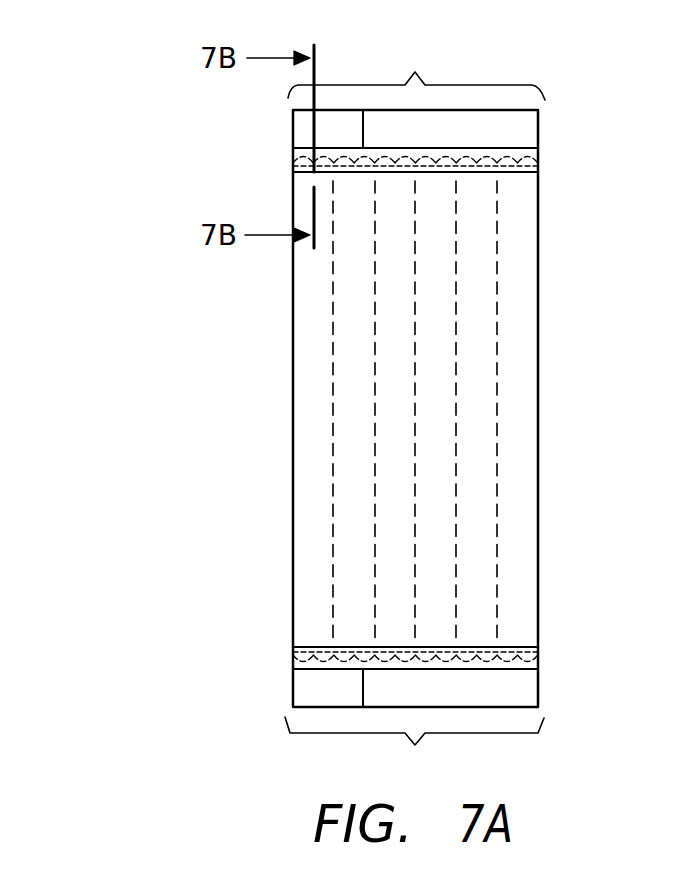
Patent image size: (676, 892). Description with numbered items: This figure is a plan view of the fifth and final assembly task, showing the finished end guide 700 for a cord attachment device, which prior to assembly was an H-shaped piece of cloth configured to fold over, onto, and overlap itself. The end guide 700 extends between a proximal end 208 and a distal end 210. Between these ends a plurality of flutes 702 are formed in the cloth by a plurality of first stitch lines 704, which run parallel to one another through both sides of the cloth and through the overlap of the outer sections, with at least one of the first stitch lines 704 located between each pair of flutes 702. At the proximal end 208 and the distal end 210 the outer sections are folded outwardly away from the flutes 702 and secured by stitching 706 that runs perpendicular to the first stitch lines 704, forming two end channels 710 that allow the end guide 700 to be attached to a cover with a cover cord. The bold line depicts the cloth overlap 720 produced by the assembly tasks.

The end guide 700 is at (247, 175).
The flutes 702 is at (388, 398).
The first stitch lines 704 is at (373, 510).
The stitching 706 is at (497, 172).
The end channels 710 is at (525, 130).
The cloth overlap 720 is at (363, 128).
The proximal end 208 is at (416, 71).
The distal end 210 is at (414, 747).